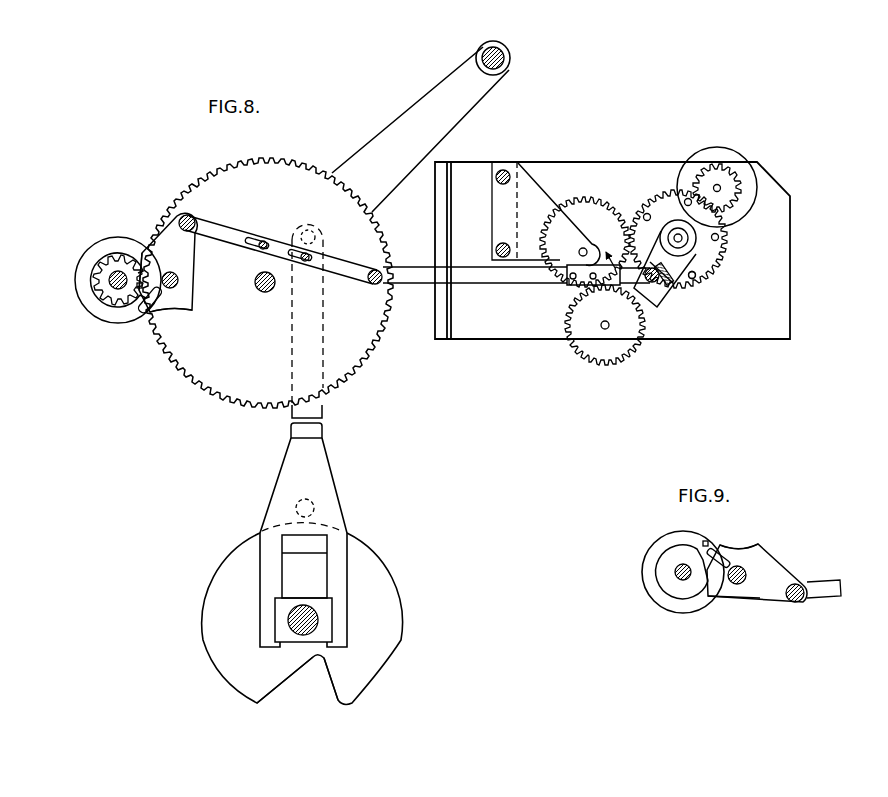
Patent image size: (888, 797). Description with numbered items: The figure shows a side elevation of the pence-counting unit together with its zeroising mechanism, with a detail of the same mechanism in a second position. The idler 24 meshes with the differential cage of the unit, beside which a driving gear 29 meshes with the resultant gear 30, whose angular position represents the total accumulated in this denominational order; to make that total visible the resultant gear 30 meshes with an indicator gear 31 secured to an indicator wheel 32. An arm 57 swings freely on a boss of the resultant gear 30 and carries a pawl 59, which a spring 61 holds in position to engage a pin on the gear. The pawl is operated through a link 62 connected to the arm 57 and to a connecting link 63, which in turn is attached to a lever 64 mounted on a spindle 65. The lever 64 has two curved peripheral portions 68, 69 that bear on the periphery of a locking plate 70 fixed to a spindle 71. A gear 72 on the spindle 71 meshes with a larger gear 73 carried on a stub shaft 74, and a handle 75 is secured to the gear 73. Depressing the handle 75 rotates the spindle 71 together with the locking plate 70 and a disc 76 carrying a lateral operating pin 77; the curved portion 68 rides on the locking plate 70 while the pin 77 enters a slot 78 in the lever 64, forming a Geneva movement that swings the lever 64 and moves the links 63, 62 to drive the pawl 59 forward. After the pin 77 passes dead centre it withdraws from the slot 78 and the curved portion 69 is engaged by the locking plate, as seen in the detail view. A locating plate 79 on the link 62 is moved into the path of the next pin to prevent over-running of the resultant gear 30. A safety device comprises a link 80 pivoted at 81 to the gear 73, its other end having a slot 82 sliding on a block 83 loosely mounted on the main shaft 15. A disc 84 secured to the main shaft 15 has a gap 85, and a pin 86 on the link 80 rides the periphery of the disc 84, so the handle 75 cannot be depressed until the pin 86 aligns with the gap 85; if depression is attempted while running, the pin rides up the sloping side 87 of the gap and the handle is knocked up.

In FIG. 8, the main shaft 15 is at (288, 621).
In FIG. 8, the idler 24 is at (607, 350).
In FIG. 8, the driving gear 29 is at (588, 208).
In FIG. 8, the resultant gear 30 is at (710, 247).
In FIG. 8, the indicator gear 31 is at (724, 192).
In FIG. 8, the indicator wheel 32 is at (722, 157).
In FIG. 8, the arm 57 is at (667, 293).
In FIG. 8, the pawl 59 is at (702, 283).
In FIG. 8, the spring 61 is at (669, 284).
In FIG. 8, the link 62 is at (475, 277).
In FIG. 8, the connecting link 63 is at (338, 262).
In FIG. 8, the lever 64 is at (197, 254).
In FIG. 9, the lever 64 is at (777, 558).
In FIG. 8, the spindle 65 is at (179, 283).
In FIG. 9, the spindle 65 is at (740, 584).
In FIG. 8, the curved peripheral portion 68 is at (141, 268).
In FIG. 9, the curved peripheral portion 68 is at (742, 548).
In FIG. 8, the curved peripheral portion 69 is at (176, 310).
In FIG. 9, the curved peripheral portion 69 is at (722, 597).
In FIG. 8, the locking plate 70 is at (90, 297).
In FIG. 9, the locking plate 70 is at (672, 557).
In FIG. 8, the spindle 71 is at (110, 277).
In FIG. 9, the spindle 71 is at (677, 576).
In FIG. 8, the gear 72 is at (125, 252).
In FIG. 8, the gear 73 is at (270, 170).
In FIG. 8, the stub shaft 74 is at (264, 293).
In FIG. 8, the handle 75 is at (421, 117).
In FIG. 8, the disc 76 is at (97, 248).
In FIG. 9, the disc 76 is at (693, 540).
In FIG. 8, the operating pin 77 is at (139, 290).
In FIG. 9, the operating pin 77 is at (711, 543).
In FIG. 8, the slot 78 is at (153, 312).
In FIG. 8, the locating plate 79 is at (607, 249).
In FIG. 8, the link 80 is at (312, 406).
In FIG. 8, the pivot 81 is at (308, 229).
In FIG. 8, the slot 82 is at (313, 556).
In FIG. 8, the block 83 is at (322, 610).
In FIG. 8, the disc 84 is at (367, 680).
In FIG. 8, the gap 85 is at (324, 676).
In FIG. 8, the pin 86 is at (317, 507).
In FIG. 8, the sloping side 87 is at (285, 686).